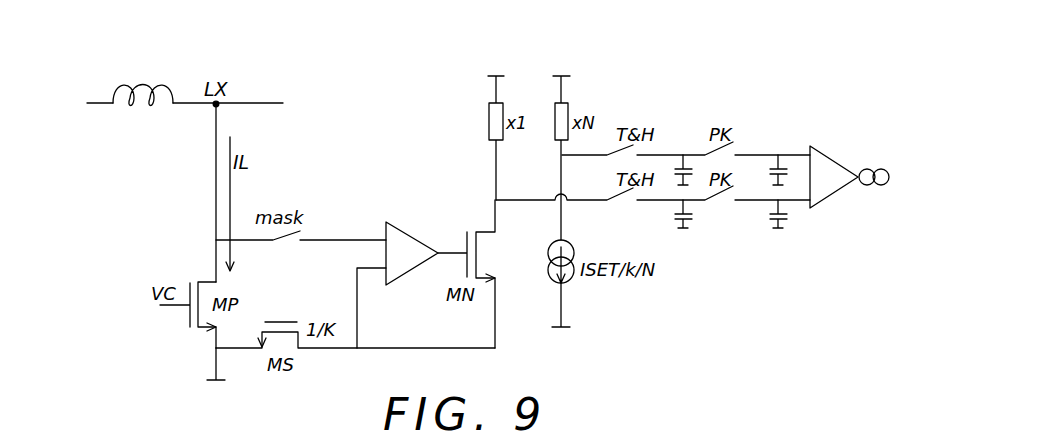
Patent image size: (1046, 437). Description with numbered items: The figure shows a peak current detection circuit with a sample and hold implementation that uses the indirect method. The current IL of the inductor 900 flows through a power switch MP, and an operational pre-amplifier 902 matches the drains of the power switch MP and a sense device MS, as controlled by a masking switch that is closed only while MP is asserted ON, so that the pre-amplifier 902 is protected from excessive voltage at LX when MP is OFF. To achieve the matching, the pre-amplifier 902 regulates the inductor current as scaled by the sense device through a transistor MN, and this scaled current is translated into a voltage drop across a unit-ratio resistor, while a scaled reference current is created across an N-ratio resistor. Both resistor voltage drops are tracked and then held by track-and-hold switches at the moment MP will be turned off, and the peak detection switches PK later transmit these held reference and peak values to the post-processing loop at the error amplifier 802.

The inductor 900 is at (141, 83).
The operational pre-amplifier 902 is at (400, 231).
The EAI amplifier 802 is at (828, 154).